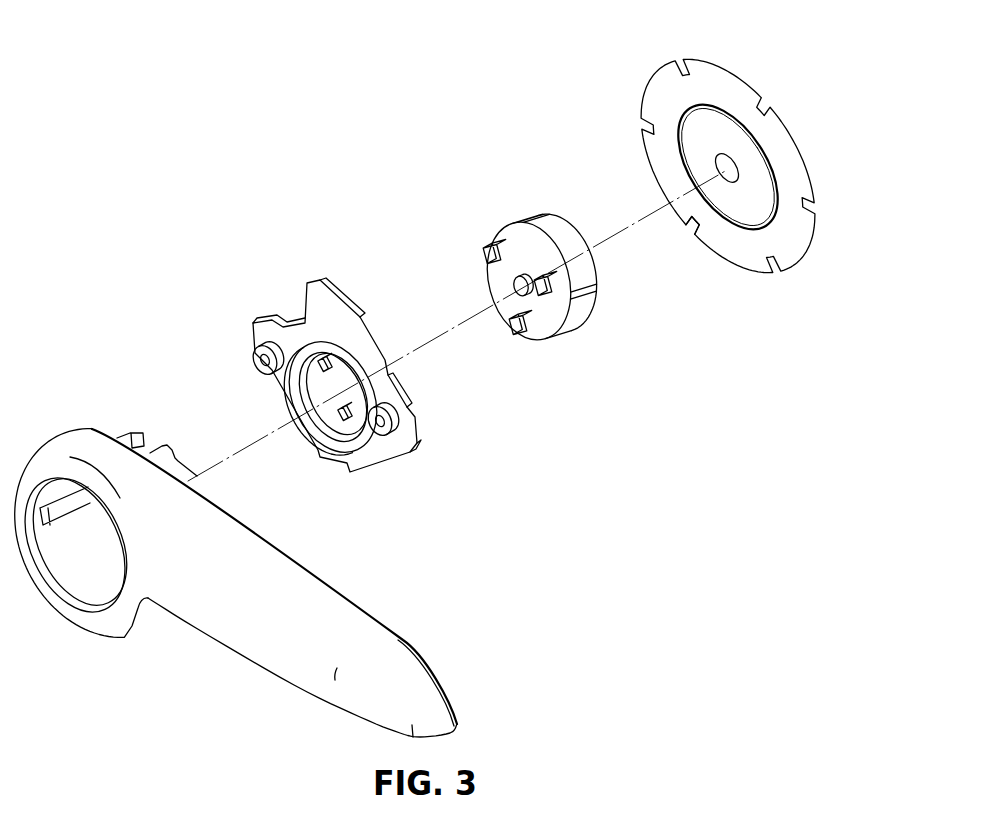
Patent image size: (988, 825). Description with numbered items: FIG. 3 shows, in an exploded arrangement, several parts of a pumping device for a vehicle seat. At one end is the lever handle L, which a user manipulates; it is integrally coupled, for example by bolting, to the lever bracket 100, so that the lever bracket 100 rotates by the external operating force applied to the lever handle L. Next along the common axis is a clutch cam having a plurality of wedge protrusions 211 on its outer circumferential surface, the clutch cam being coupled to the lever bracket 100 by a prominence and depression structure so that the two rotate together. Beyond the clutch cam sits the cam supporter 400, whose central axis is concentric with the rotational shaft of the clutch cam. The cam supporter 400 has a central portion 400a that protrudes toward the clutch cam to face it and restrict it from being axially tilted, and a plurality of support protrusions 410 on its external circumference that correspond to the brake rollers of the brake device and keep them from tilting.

The lever handle L is at (183, 610).
The lever bracket 100 is at (273, 298).
The wedge protrusions 211 is at (505, 210).
The cam supporter 400 is at (765, 290).
The central portion 400a is at (717, 132).
The support protrusions 410 is at (676, 212).